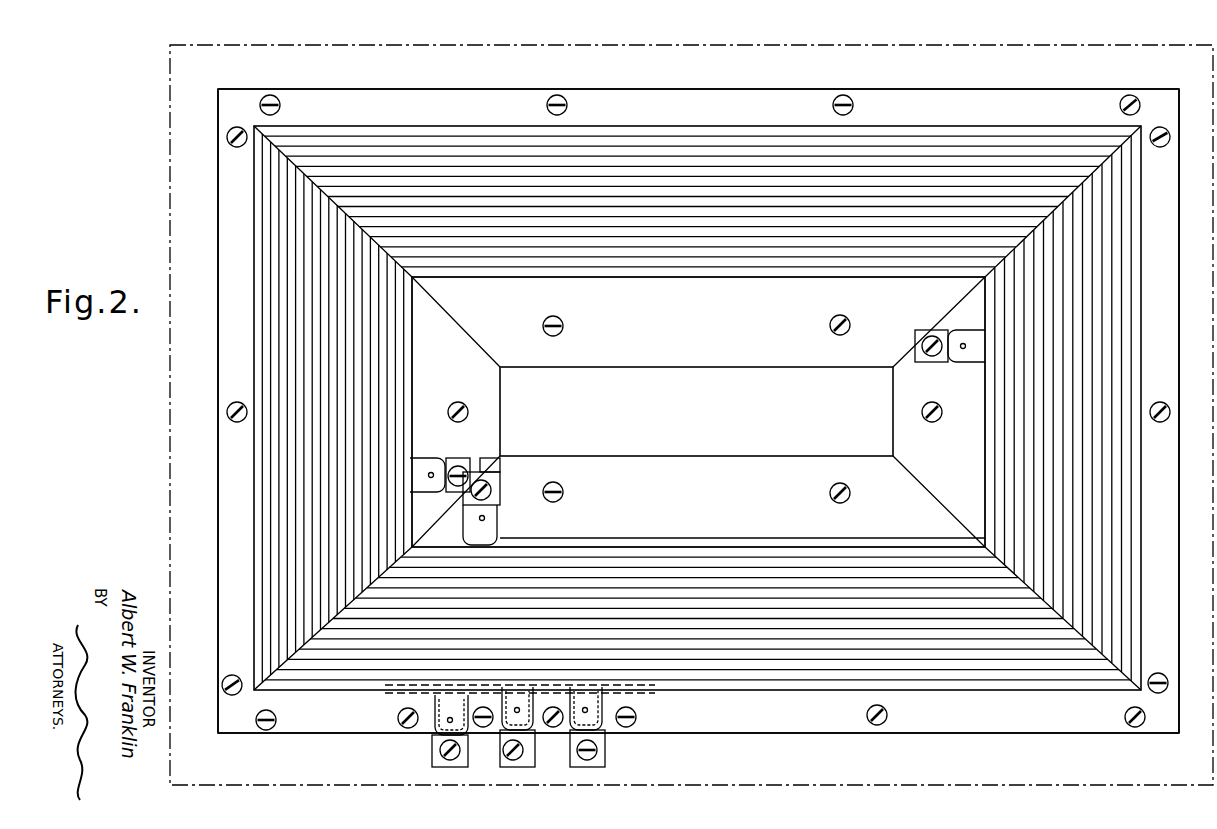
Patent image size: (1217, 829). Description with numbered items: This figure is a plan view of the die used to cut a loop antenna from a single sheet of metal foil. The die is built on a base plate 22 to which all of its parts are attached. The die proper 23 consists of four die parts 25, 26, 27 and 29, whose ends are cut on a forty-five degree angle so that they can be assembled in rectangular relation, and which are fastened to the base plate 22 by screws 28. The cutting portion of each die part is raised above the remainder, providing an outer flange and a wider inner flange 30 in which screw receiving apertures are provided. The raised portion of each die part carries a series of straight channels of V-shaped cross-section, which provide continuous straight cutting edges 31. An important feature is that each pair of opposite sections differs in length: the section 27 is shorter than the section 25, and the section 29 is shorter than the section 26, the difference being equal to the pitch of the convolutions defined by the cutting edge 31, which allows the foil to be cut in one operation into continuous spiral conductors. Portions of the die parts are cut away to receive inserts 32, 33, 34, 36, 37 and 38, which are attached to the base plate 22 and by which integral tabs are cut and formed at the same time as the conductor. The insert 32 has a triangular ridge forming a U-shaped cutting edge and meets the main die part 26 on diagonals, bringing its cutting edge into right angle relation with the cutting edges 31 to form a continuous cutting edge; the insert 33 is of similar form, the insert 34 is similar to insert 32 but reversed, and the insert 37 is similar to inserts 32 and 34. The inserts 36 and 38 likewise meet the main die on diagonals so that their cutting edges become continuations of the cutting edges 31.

The base plate 22 is at (202, 63).
The die proper 23 is at (662, 417).
The die part 25 is at (227, 557).
The die part 26 is at (810, 720).
The die part 27 is at (1165, 475).
The screws 28 is at (1162, 133).
The die part 29 is at (735, 100).
The inner flange 30 is at (628, 352).
The cutting edges 31 is at (745, 575).
The insert 32 is at (465, 765).
The insert 33 is at (520, 762).
The insert 34 is at (597, 760).
The insert 36 is at (470, 463).
The insert 37 is at (493, 480).
The insert 38 is at (923, 355).